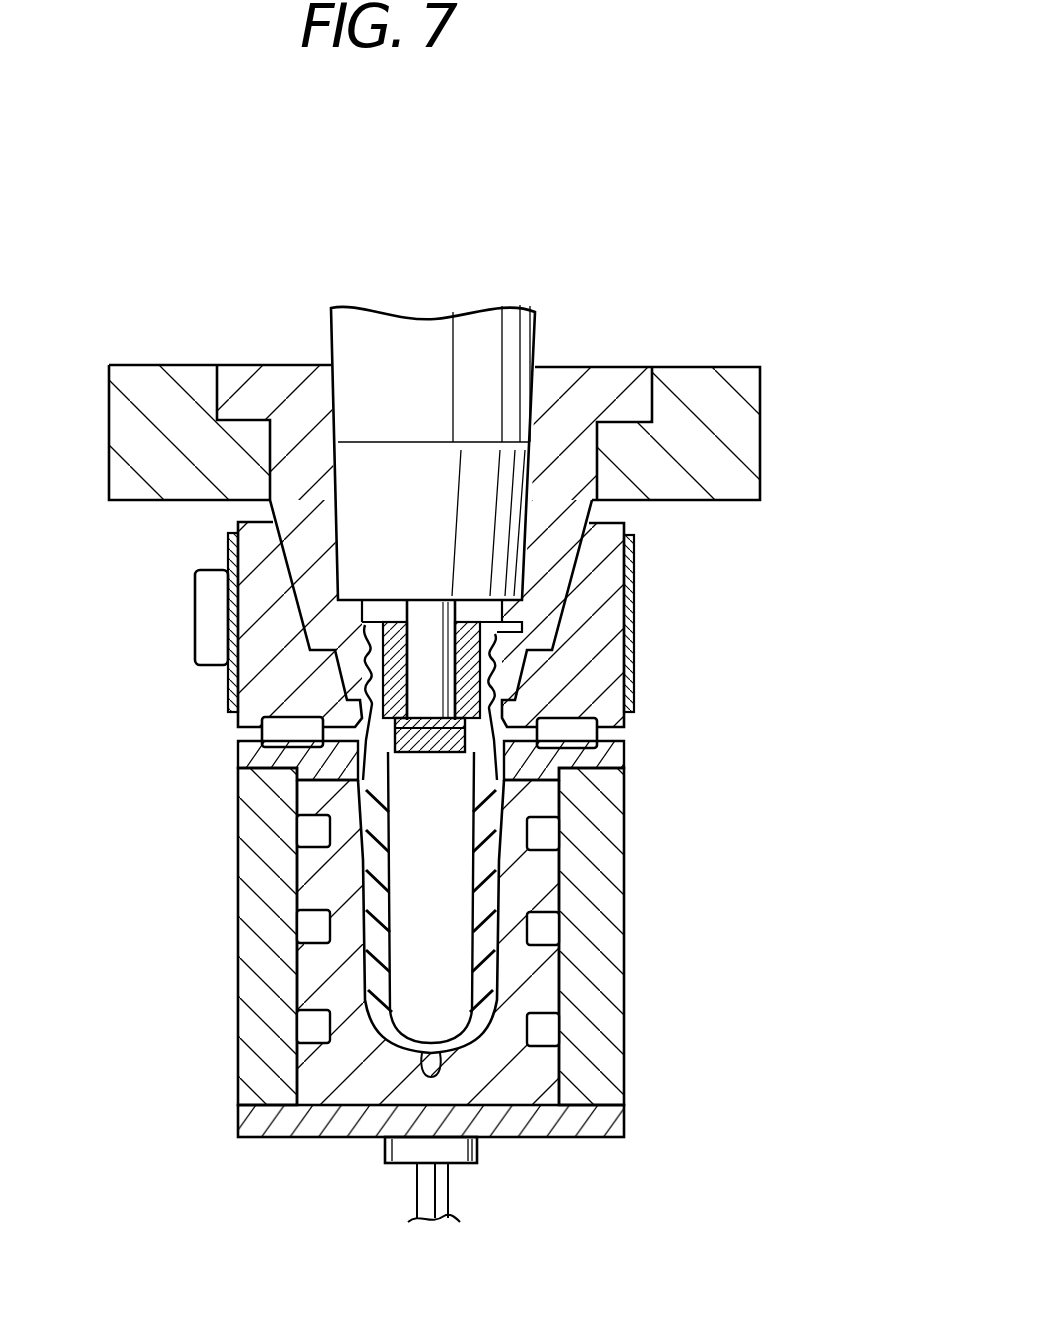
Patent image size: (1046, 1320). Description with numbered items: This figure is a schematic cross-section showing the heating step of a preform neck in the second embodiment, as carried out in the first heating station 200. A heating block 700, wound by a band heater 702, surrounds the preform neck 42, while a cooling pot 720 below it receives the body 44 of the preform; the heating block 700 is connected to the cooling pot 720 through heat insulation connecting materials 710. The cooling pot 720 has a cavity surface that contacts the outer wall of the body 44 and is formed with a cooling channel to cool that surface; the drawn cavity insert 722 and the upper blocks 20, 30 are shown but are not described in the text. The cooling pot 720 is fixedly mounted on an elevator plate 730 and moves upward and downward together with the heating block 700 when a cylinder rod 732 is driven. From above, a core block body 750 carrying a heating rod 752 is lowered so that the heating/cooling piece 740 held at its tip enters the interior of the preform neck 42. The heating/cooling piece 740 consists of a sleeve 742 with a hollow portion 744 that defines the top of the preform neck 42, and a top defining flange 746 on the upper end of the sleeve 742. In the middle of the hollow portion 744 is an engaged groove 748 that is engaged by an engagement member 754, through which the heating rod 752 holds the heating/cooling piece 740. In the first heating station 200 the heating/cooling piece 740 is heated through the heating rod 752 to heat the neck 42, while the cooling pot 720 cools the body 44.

The first heating station 200 is at (580, 238).
The injection device / hot runner block 20 is at (766, 428).
The hot runner block 30 is at (590, 400).
The heating block 700 is at (633, 523).
The band heater 702 is at (637, 547).
The top defining flange 746 is at (368, 596).
The heat insulation connecting materials 710 is at (240, 757).
The core block body 750 is at (350, 338).
The heating rod 752 is at (457, 650).
The hollow portion 744 is at (435, 752).
The heating/cooling piece 740 is at (505, 690).
The sleeve 742 is at (382, 655).
The engagement member 754 is at (620, 755).
The preform neck 42 is at (385, 686).
The cooling pot 720 is at (543, 883).
The cavity insert 722 is at (543, 1027).
The body 44 is at (490, 958).
The elevator plate 730 is at (603, 1125).
The cylinder rod 732 is at (433, 1193).
The engaged groove 748 is at (395, 793).